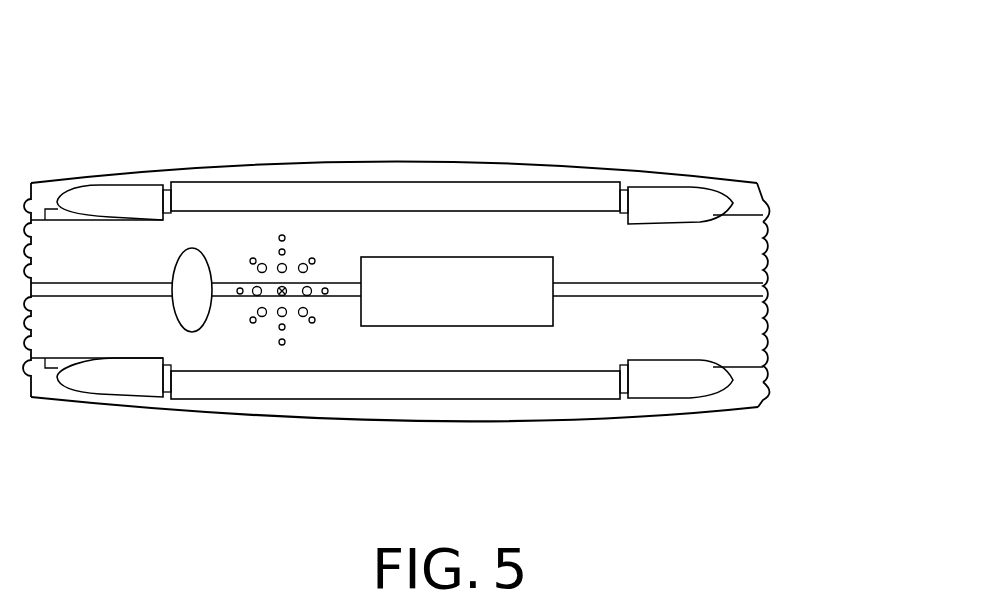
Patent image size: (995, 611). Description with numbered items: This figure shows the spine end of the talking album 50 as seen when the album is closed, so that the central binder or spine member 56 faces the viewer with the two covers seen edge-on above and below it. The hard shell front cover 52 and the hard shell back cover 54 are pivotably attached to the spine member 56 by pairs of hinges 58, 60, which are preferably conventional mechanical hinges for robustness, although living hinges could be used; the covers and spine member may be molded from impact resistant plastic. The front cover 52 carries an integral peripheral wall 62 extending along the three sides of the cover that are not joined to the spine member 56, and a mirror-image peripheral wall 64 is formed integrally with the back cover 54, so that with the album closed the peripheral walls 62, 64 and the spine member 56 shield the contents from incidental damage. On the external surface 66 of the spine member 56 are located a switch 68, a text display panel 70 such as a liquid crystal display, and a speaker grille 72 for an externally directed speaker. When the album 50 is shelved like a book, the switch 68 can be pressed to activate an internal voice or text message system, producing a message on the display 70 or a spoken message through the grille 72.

The album 50 is at (770, 95).
The hard shell front cover 52 is at (400, 173).
The hard shell back cover 54 is at (467, 410).
The spine member 56 is at (764, 268).
The hinges 58 is at (168, 173).
The hinges 60 is at (628, 175).
The peripheral wall 62 is at (765, 202).
The peripheral wall 64 is at (762, 392).
The external surface 66 is at (738, 332).
The switch 68 is at (192, 266).
The text display panel 70 is at (497, 316).
The speaker grille 72 is at (305, 337).